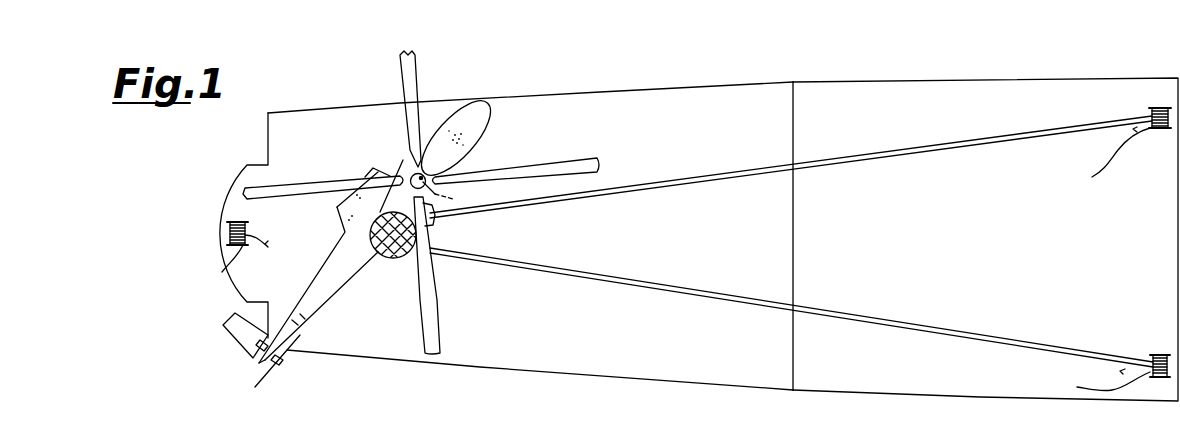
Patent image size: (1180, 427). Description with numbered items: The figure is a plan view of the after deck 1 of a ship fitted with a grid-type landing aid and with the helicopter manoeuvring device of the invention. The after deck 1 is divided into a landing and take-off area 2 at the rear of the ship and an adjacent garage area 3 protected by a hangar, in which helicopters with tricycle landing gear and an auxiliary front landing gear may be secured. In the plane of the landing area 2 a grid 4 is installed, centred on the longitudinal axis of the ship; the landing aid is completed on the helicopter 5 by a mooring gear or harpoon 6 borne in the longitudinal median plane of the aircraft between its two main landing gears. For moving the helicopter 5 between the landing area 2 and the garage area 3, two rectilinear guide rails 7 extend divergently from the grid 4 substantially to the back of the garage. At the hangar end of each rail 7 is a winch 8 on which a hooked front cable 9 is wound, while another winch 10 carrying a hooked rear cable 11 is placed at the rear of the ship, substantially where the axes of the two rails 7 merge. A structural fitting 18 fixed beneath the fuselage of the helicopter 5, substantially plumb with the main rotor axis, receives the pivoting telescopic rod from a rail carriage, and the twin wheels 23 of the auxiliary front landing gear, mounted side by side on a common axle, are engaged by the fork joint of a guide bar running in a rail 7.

The after deck 1 is at (699, 227).
The landing and take-off area 2 is at (617, 128).
The garage area 3 is at (918, 112).
The grid 4 is at (390, 262).
The helicopter 5 is at (443, 119).
The mooring gear 6 is at (383, 213).
The guide rails 7 is at (848, 160).
The winch 8 is at (1165, 130).
The front cable 9 is at (1101, 262).
The winch 10 is at (237, 222).
The rear cable 11 is at (222, 272).
The structural fitting 18 is at (467, 204).
The twin wheels 23 is at (481, 143).